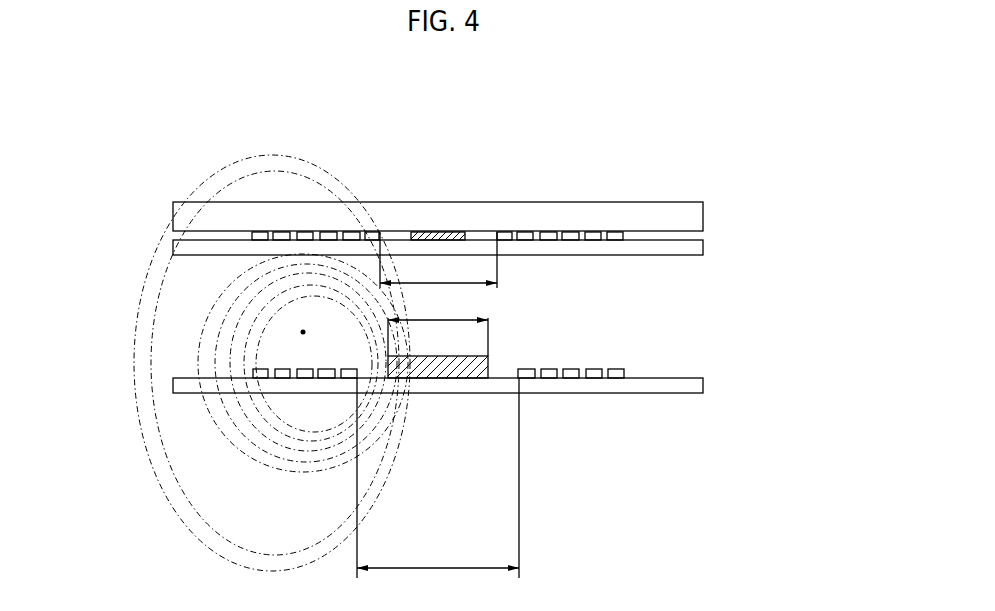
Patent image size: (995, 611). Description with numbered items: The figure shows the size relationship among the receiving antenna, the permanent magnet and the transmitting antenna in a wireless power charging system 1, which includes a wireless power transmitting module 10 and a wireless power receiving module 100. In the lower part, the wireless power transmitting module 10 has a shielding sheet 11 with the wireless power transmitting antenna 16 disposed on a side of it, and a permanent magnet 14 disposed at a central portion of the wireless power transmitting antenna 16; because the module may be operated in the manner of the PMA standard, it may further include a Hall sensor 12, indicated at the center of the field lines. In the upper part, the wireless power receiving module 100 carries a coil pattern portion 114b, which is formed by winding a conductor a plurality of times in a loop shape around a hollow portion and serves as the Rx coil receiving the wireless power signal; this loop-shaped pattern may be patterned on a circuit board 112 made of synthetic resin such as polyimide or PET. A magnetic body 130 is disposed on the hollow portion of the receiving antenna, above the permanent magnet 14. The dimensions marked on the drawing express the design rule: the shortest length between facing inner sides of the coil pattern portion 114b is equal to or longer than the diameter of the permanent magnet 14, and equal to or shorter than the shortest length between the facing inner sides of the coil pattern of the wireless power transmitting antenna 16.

The wireless power charging system 1 is at (470, 102).
The wireless power transmitting module 10 is at (504, 381).
The shielding sheet 11 is at (663, 383).
The Hall sensor 12 is at (303, 332).
The permanent magnet 14 is at (452, 378).
The wireless power transmitting antenna 16 is at (588, 369).
The wireless power receiving module 100 is at (720, 227).
The circuit board 112 is at (697, 247).
The coil pattern portion 114b is at (527, 232).
The magnetic body 130 is at (433, 232).